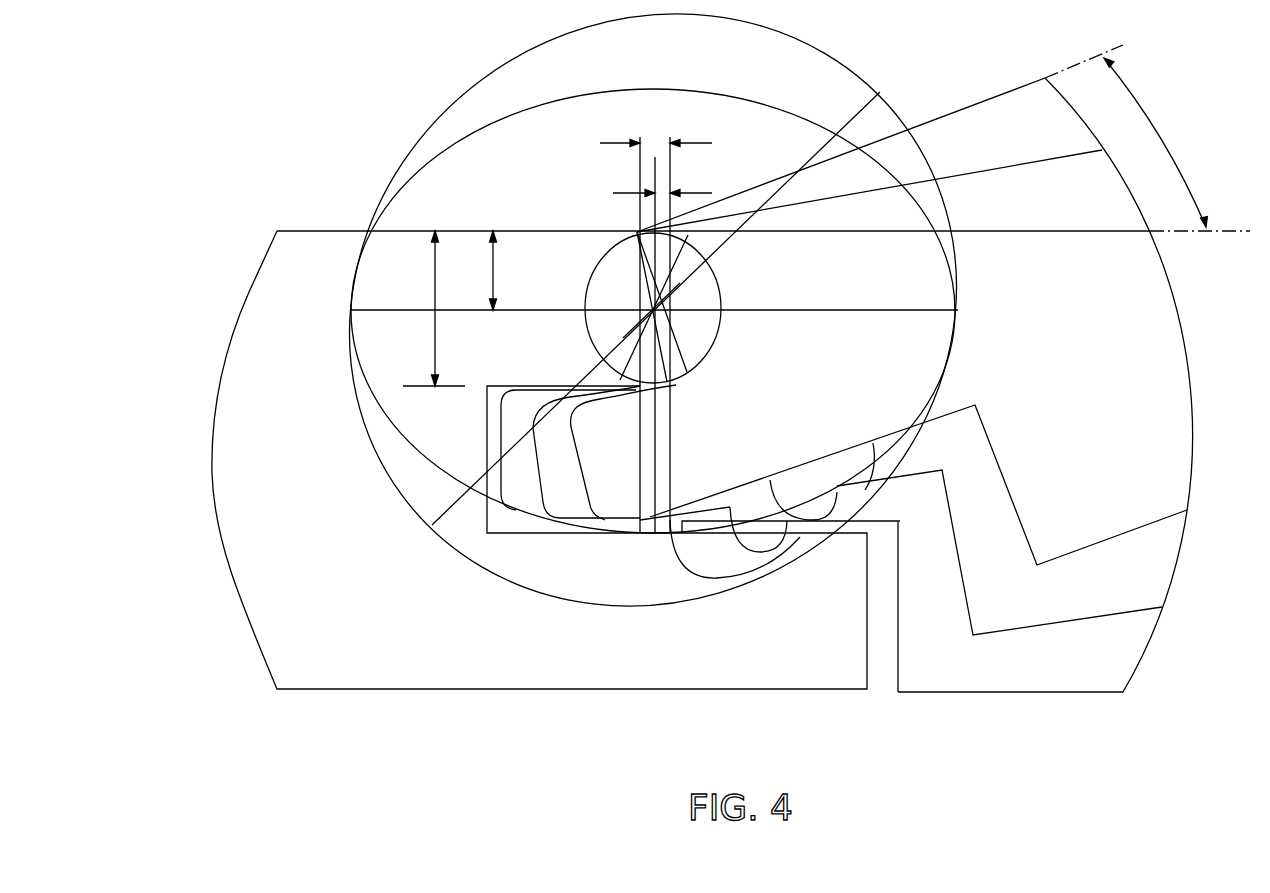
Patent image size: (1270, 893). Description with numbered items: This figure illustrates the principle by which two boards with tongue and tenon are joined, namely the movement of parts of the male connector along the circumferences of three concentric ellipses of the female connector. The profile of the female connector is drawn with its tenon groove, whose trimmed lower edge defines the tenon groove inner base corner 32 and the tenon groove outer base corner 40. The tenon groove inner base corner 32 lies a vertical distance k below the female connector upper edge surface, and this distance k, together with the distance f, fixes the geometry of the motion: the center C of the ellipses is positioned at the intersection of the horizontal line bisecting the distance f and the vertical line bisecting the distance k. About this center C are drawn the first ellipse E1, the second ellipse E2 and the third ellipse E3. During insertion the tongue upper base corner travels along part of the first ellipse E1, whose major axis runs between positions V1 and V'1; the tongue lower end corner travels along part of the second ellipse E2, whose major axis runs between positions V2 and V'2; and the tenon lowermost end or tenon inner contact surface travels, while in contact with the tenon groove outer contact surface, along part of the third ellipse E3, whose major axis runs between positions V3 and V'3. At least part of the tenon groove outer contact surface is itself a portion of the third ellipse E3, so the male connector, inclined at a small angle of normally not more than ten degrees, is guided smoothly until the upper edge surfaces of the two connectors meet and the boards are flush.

The tenon groove inner base corner 32 is at (629, 275).
The tenon groove outer base corner 40 is at (668, 537).
The first ellipse E1 is at (592, 275).
The second ellipse E2 is at (467, 137).
The third ellipse E3 is at (465, 90).
The position V1 is at (688, 237).
The position V'1 is at (617, 358).
The position V2 is at (659, 310).
The position V'2 is at (980, 310).
The position V3 is at (652, 312).
The position V'3 is at (415, 552).
The center C is at (650, 309).
The distance k is at (656, 333).
The distance f is at (450, 308).